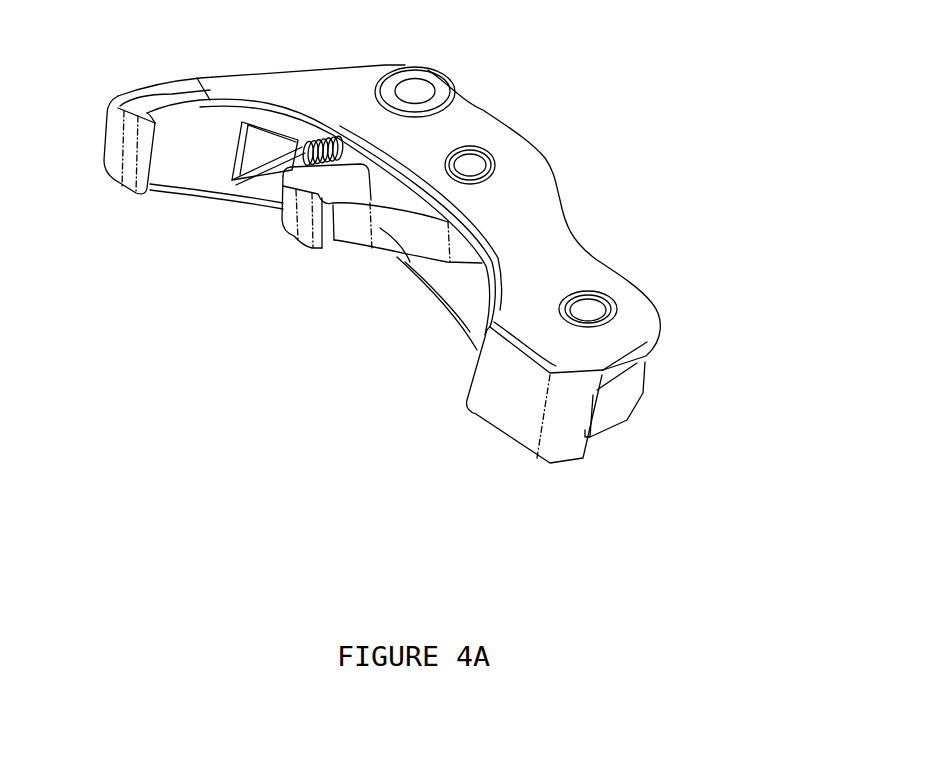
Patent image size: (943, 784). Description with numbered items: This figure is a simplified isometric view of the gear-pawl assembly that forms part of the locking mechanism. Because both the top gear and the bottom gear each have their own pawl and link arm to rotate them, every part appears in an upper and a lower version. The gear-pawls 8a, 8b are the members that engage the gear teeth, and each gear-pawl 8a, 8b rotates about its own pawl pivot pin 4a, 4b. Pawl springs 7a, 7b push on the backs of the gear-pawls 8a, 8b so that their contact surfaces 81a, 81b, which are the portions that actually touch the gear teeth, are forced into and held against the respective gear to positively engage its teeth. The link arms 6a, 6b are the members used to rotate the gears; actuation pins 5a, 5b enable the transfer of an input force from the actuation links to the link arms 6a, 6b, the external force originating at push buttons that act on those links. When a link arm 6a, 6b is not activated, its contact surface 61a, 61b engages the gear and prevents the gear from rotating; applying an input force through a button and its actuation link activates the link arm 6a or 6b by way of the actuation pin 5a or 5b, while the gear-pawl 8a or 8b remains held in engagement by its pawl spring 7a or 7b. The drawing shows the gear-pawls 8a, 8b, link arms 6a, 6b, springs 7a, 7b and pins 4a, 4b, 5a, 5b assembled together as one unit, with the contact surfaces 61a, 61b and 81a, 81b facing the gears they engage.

The pawl pivot pin 4a is at (578, 139).
The pawl pivot pin 4b is at (470, 167).
The actuation pin 5a is at (693, 285).
The actuation pin 5b is at (590, 312).
The link arm 6a is at (515, 78).
The link arm 6b is at (477, 133).
The pawl spring 7a is at (220, 233).
The pawl spring 7b is at (240, 182).
The gear-pawl 8a is at (408, 332).
The gear-pawl 8b is at (400, 265).
The contact surface 61a is at (110, 194).
The contact surface 61b is at (163, 159).
The contact surface 81a is at (326, 285).
The contact surface 81b is at (335, 240).